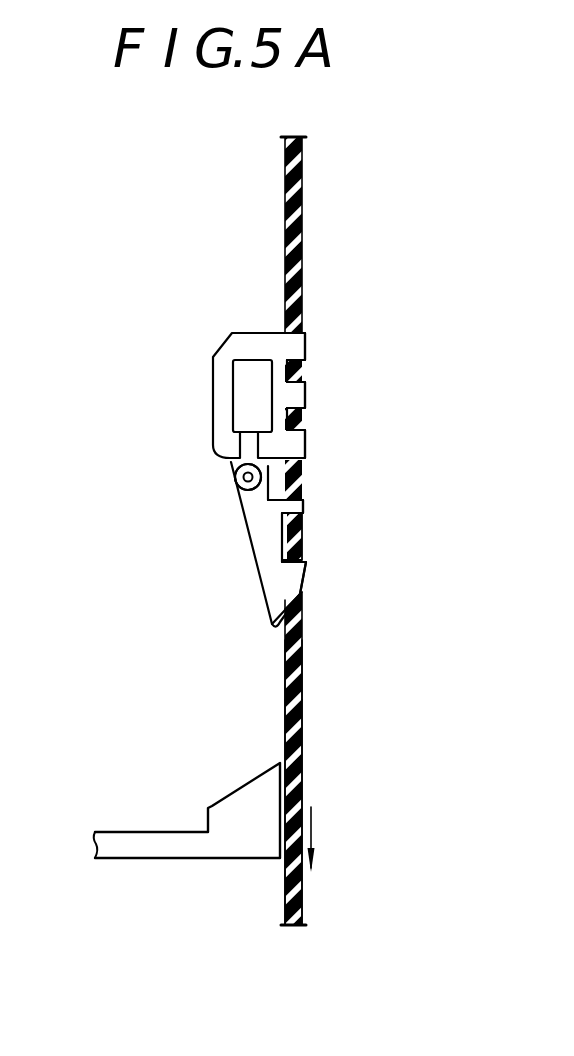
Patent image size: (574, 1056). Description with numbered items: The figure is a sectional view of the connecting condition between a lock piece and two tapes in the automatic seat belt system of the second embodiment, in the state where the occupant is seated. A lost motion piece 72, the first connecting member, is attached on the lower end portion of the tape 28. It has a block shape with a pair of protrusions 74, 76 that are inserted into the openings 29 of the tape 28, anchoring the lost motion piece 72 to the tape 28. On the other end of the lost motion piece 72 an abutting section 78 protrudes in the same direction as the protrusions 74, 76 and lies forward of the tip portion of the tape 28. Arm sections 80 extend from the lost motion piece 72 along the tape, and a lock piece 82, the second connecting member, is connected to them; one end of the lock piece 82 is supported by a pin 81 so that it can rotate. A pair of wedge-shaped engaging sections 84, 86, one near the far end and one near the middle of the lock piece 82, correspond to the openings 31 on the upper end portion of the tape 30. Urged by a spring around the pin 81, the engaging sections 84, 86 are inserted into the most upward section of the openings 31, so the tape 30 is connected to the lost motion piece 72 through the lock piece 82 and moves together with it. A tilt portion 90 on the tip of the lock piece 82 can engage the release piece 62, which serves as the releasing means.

The tape 28 is at (305, 237).
The openings 29 is at (303, 336).
The tape 30 is at (302, 740).
The openings 31 is at (303, 522).
The release piece 62 is at (237, 787).
The lost motion piece 72 is at (216, 352).
The protrusion 74 is at (305, 348).
The protrusion 76 is at (305, 407).
The abutting section 78 is at (305, 447).
The arm sections 80 is at (232, 458).
The pin 81 is at (232, 488).
The lock piece 82 is at (250, 552).
The engaging section 84 is at (303, 505).
The engaging section 86 is at (306, 563).
The tilt portion 90 is at (300, 653).